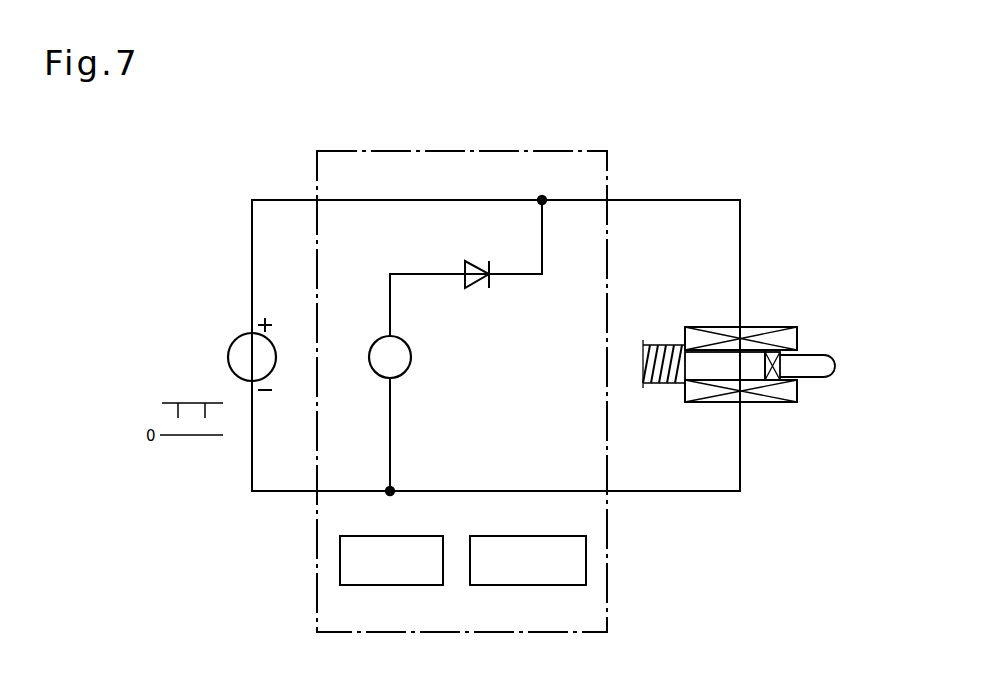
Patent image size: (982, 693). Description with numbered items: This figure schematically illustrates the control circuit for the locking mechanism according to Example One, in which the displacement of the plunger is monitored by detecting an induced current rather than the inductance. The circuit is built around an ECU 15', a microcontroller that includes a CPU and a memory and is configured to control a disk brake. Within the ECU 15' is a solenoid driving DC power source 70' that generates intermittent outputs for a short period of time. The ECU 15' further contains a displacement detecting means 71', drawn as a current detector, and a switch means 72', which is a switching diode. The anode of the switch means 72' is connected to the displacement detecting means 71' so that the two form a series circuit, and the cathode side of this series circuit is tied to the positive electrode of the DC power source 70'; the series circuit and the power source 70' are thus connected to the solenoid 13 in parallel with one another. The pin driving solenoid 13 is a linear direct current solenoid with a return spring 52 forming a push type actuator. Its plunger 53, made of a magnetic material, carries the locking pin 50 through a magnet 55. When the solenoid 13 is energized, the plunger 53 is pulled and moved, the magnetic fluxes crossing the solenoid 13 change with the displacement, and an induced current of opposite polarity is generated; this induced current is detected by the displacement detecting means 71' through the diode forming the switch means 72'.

The ECU 15' is at (462, 361).
The solenoid driving DC power source 70' is at (231, 337).
The displacement detecting means 71' is at (377, 300).
The switch means 72' is at (487, 302).
The pin driving solenoid 13 is at (783, 327).
The plunger 53 is at (707, 368).
The magnet 55 is at (780, 368).
The locking pin 50 is at (812, 362).
The return spring 52 is at (650, 345).